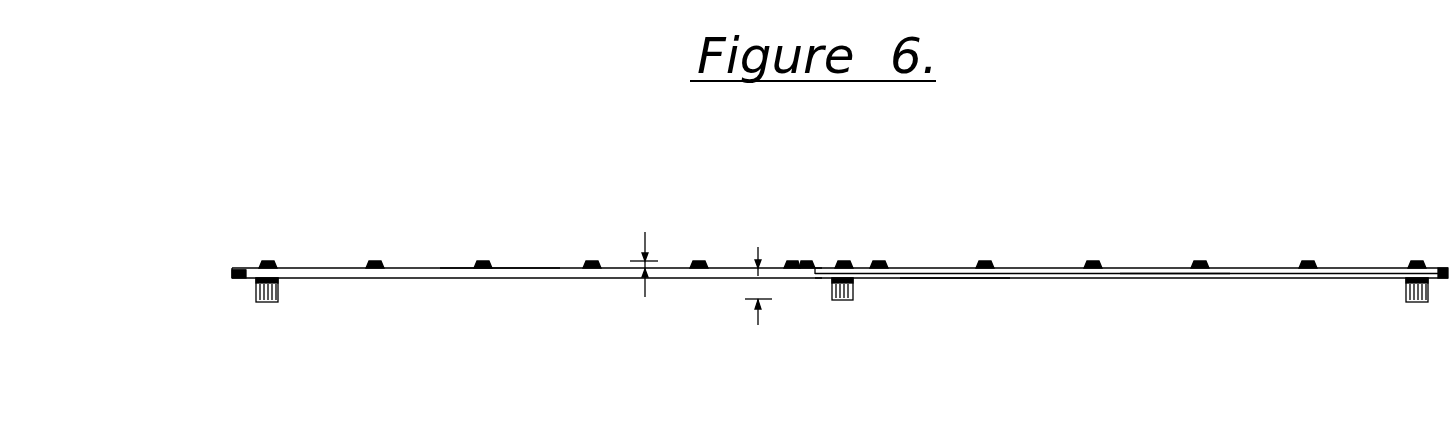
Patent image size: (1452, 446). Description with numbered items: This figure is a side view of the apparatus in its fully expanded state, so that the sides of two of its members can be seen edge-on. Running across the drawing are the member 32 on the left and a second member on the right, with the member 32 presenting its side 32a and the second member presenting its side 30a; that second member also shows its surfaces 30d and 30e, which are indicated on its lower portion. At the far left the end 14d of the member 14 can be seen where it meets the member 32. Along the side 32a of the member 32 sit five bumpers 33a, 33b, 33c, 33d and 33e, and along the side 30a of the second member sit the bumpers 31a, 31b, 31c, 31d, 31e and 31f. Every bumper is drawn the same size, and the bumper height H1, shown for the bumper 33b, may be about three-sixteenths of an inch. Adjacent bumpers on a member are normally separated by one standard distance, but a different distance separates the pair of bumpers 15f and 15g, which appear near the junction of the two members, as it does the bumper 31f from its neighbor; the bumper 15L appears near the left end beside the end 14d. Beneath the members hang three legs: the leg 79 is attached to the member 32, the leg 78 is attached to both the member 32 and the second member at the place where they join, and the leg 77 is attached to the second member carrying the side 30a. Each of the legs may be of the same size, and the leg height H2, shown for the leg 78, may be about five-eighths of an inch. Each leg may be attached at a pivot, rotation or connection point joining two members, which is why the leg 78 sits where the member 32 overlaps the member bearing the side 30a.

The member 14 is at (237, 268).
The end of member 14d is at (231, 270).
The latch protrusion 15L is at (272, 261).
The bumper 15f is at (874, 258).
The bumper 15g is at (788, 259).
The member 32 is at (533, 280).
The side of member 32a is at (503, 268).
The bumper 33a is at (809, 259).
The bumper 33b is at (688, 258).
The bumper 33c is at (587, 258).
The bumper 33d is at (476, 258).
The bumper 33e is at (368, 258).
The side of member 30a is at (1138, 268).
The surface of member 30d is at (955, 277).
The surface of member 30e is at (1172, 273).
The bumper 31a is at (1414, 259).
The bumper 31b is at (1305, 259).
The bumper 31c is at (1198, 259).
The bumper 31d is at (1094, 259).
The bumper 31e is at (989, 259).
The bumper 31f is at (841, 259).
The leg 77 is at (1418, 302).
The leg 78 is at (843, 301).
The leg 79 is at (268, 303).
The bumper height H1 is at (648, 280).
The leg height H2 is at (760, 304).